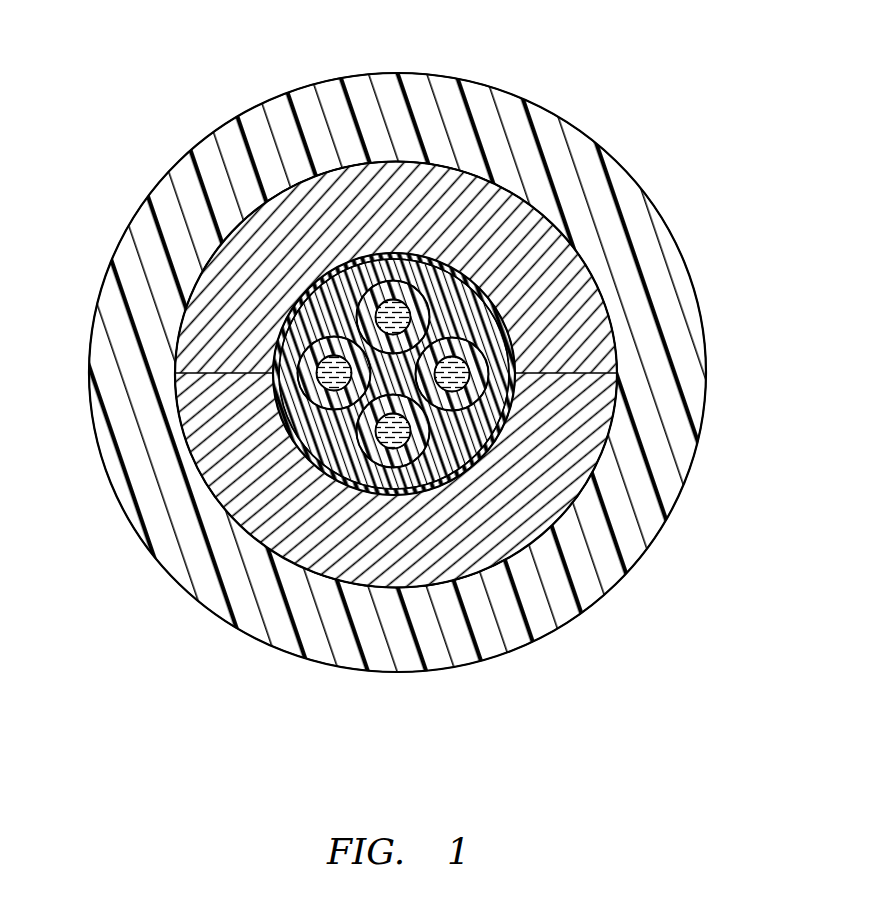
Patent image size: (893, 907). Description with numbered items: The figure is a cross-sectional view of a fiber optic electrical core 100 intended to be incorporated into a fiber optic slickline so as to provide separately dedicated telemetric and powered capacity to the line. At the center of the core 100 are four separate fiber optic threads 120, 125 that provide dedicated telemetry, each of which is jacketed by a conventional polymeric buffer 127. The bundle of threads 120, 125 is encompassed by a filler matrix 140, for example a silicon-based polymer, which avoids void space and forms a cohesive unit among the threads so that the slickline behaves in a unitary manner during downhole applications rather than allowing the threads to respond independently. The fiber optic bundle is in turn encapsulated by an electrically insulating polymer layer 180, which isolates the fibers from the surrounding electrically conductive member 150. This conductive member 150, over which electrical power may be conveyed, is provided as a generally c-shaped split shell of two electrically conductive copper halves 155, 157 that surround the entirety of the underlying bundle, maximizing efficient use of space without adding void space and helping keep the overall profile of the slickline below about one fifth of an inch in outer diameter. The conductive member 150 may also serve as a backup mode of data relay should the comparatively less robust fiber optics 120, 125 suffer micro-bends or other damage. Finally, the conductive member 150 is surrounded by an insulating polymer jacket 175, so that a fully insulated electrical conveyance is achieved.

The fiber optic electrical core 100 is at (397, 368).
The insulating polymer jacket 175 is at (582, 592).
The conductive member 150 is at (378, 343).
The split shell half 155 is at (505, 205).
The split shell half 157 is at (578, 478).
The fiber optic thread 125 is at (222, 452).
The electrically insulating polymer layer 180 is at (519, 368).
The polymeric buffer 127 is at (385, 495).
The filler matrix 140 is at (495, 410).
The fiber optic thread 120 is at (268, 396).